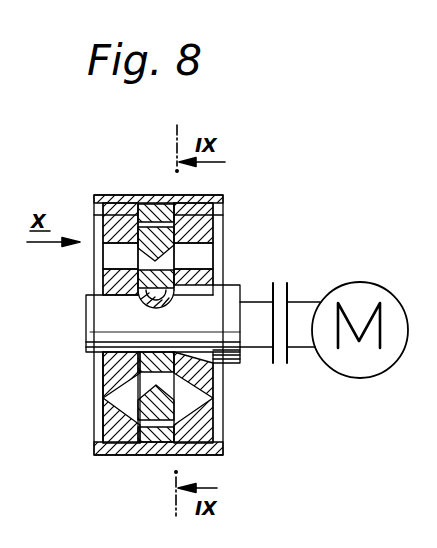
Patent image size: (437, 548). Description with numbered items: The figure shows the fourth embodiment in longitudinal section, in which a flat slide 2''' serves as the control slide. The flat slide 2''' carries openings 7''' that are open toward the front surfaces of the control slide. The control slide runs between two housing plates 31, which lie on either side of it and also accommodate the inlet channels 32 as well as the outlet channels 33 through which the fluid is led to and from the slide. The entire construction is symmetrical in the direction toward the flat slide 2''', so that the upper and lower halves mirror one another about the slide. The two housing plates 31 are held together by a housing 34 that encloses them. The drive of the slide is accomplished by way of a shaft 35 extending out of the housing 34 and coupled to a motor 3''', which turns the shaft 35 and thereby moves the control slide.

The housing plates 31 is at (186, 210).
The inlet channels 32 is at (116, 255).
The outlet channels 33 is at (116, 402).
The housing 34 is at (207, 453).
The shaft 35 is at (203, 323).
The openings 7''' is at (203, 255).
The flat slide 2''' is at (163, 396).
The motor 3''' is at (324, 314).